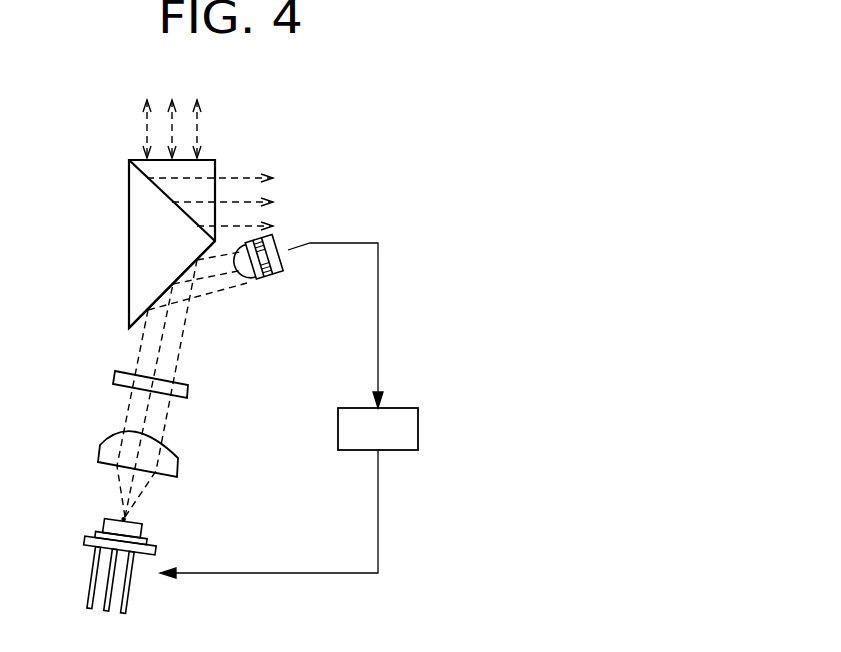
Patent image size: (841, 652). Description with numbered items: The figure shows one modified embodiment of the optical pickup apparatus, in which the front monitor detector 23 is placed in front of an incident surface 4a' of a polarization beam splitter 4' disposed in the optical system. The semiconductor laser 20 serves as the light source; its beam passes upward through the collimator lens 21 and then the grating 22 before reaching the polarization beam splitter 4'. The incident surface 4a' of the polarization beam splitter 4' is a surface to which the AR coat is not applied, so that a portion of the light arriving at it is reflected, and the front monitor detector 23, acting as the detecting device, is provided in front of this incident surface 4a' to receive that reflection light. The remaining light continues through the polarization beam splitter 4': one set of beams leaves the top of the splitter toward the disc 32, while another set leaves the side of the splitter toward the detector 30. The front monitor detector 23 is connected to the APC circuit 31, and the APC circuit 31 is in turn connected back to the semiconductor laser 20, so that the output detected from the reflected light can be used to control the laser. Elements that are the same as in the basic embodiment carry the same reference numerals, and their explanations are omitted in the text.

The polarization beam splitter 4' is at (130, 244).
The incident surface 4a' is at (140, 300).
The semiconductor laser 20 is at (145, 533).
The collimator lens 21 is at (180, 458).
The grating 22 is at (193, 392).
The front monitor detector 23 is at (273, 277).
The detector 30 is at (318, 202).
The APC circuit 31 is at (418, 432).
The disc 32 is at (170, 114).